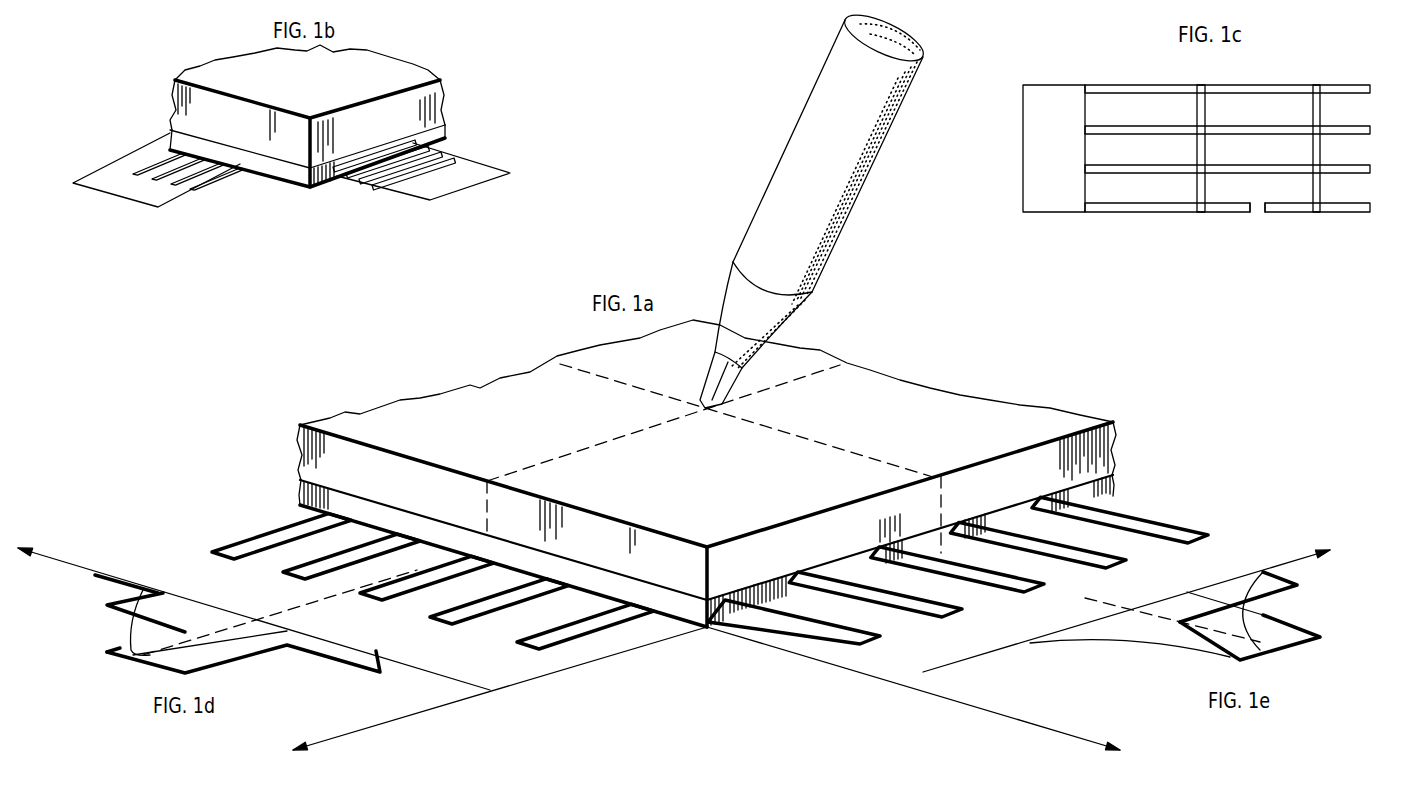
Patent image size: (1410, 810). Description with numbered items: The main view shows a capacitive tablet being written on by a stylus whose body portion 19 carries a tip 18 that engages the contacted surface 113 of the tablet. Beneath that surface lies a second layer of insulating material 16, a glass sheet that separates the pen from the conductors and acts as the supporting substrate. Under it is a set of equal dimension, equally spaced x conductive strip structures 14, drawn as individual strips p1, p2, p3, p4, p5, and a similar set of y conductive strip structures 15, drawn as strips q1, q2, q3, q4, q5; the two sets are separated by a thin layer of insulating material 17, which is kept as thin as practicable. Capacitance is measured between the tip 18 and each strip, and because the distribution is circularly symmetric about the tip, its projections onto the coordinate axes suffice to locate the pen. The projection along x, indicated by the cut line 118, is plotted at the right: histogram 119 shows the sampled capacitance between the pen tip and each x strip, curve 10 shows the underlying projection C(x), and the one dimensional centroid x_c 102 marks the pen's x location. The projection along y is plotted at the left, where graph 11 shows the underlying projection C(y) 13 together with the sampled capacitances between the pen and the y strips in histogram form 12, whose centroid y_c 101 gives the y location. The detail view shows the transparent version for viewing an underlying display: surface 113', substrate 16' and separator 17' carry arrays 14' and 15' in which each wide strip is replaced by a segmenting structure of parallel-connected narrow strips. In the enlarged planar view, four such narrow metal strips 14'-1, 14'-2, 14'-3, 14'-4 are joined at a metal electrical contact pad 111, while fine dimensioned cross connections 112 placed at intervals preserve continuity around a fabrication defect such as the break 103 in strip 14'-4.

In FIG. 1E, the curve 10 is at (1265, 617).
In FIG. 1A, the graph 11 is at (437, 708).
In FIG. 1D, the histogram 12 is at (227, 663).
In FIG. 1D, the capacitance distribution projection C(y) 13 is at (133, 622).
In FIG. 1A, the x conductive strip structures 14 is at (731, 490).
In FIG. 1A, the y conductive strip structures 15 is at (424, 605).
In FIG. 1A, the second layer of insulating material 16 is at (680, 505).
In FIG. 1A, the thin layer of insulating material 17 is at (677, 547).
In FIG. 1A, the tip 18 is at (705, 412).
In FIG. 1A, the body portion 19 is at (796, 148).
In FIG. 1D, the one dimensional centroid y_c 101 is at (133, 663).
In FIG. 1E, the one dimensional centroid x_c 102 is at (1290, 650).
In FIG. 1A, the contacted surface 113 is at (706, 433).
In FIG. 1A, the cut line along x 118 is at (920, 697).
In FIG. 1E, the histogram 119 is at (1104, 657).
In FIG. 1A, the x conductive strip p1 is at (800, 630).
In FIG. 1A, the x conductive strip p2 is at (883, 606).
In FIG. 1A, the x conductive strip p3 is at (965, 579).
In FIG. 1A, the x conductive strip p4 is at (1046, 555).
In FIG. 1A, the x conductive strip p5 is at (1127, 530).
In FIG. 1A, the y conductive strip q1 is at (576, 639).
In FIG. 1A, the y conductive strip q2 is at (493, 616).
In FIG. 1A, the y conductive strip q3 is at (419, 591).
In FIG. 1A, the y conductive strip q4 is at (341, 570).
In FIG. 1A, the y conductive strip q5 is at (273, 548).
In FIG. 1B, the top sheet 113' is at (307, 67).
In FIG. 1B, the resistive layer 16' is at (340, 111).
In FIG. 1B, the electrode layer 17' is at (278, 136).
In FIG. 1B, the y strip array 15' is at (158, 161).
In FIG. 1B, the x strip array 14' is at (427, 156).
In FIG. 1C, the narrow metal strip 14'-1 is at (1237, 59).
In FIG. 1C, the narrow metal strip 14'-2 is at (1227, 92).
In FIG. 1C, the narrow metal strip 14'-3 is at (1227, 208).
In FIG. 1C, the narrow metal strip 14'-4 is at (1227, 246).
In FIG. 1C, the metal electrical contact pad 111 is at (1047, 200).
In FIG. 1C, the cross connections 112 is at (1322, 150).
In FIG. 1C, the break 103 is at (1258, 213).